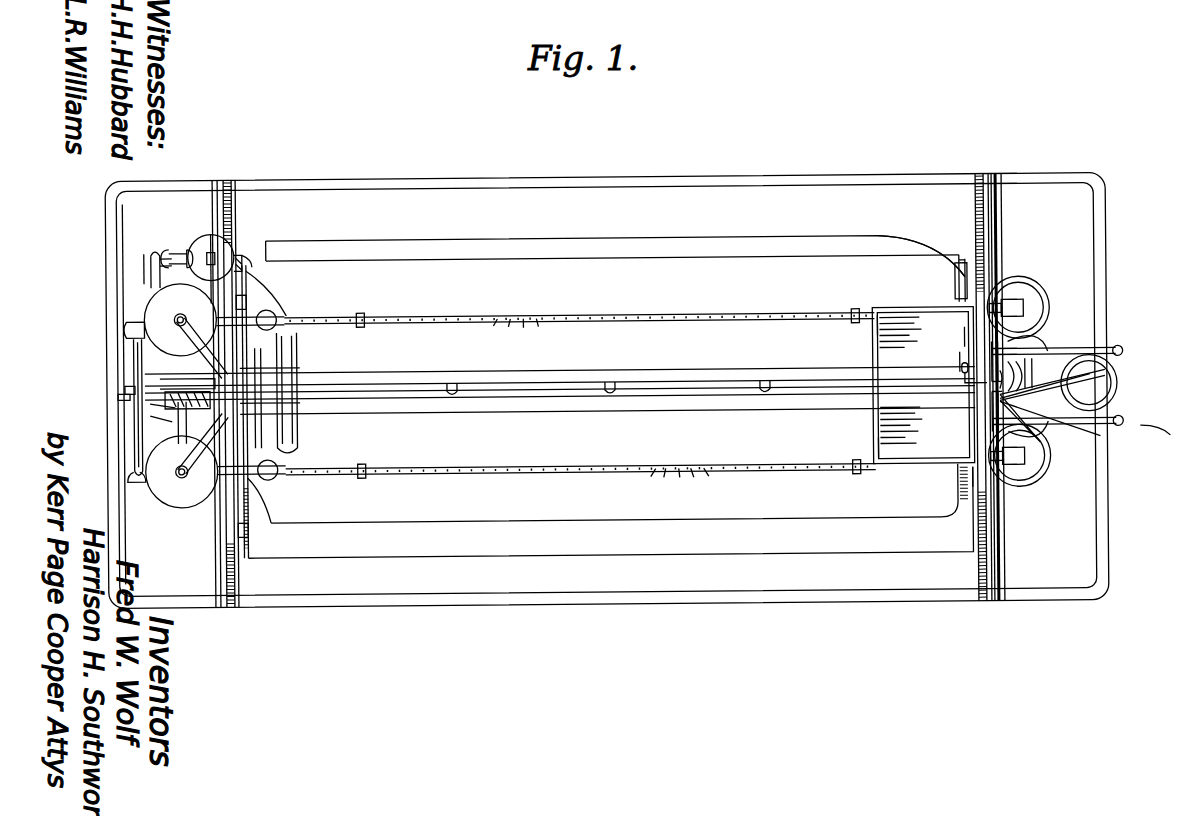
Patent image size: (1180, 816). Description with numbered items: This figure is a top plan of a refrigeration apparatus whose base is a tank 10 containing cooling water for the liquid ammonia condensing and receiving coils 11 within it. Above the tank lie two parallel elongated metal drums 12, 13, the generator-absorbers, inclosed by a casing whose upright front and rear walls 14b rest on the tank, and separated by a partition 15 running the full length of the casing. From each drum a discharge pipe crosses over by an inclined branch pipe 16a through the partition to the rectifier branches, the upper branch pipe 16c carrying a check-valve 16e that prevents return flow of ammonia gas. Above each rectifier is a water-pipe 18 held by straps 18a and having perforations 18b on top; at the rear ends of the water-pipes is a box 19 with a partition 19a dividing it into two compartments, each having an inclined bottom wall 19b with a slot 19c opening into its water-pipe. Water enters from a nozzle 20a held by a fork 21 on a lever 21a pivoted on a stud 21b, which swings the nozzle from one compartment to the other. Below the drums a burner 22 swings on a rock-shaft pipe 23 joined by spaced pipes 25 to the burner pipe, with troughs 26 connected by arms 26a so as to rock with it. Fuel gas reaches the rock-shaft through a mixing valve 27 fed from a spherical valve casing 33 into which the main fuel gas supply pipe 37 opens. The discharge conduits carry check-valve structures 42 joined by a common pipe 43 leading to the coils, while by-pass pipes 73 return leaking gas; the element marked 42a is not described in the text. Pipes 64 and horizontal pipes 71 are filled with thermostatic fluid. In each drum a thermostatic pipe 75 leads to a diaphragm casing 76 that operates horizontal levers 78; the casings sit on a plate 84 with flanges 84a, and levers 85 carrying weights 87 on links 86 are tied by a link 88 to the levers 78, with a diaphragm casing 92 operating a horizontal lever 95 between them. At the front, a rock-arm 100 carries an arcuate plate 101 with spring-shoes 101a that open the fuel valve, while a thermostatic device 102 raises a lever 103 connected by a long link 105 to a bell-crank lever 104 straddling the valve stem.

The tank 10 is at (1108, 272).
The liquid ammonia condensing and receiving coils 11 is at (884, 231).
The drum 12 is at (631, 517).
The drum 13 is at (518, 253).
The front and rear walls 14b is at (236, 213).
The partition 15 is at (425, 388).
The branch pipe 16a is at (285, 355).
The branch pipe 16c is at (212, 315).
The check-valve 16e is at (283, 316).
The water-pipe 18 is at (583, 306).
The straps 18a is at (363, 313).
The perforations 18b is at (600, 398).
The box 19 is at (868, 359).
The partition 19a is at (905, 395).
The bottom wall 19b is at (940, 420).
The slot 19c is at (898, 320).
The nozzle 20a is at (950, 460).
The fork 21 is at (962, 366).
The lever 21a is at (1036, 438).
The stud 21b is at (1100, 440).
The burner 22 is at (187, 377).
The pipe 23 is at (362, 380).
The pipes 25 is at (452, 398).
The troughs 26 is at (258, 284).
The arms 26a is at (254, 300).
The mixing valve 27 is at (150, 362).
The valve casing 33 is at (125, 384).
The main fuel gas supply pipe 37 is at (118, 393).
The check-valve structure 42 is at (137, 302).
The post foot 42a is at (142, 488).
The common pipe 43 is at (152, 280).
The pipe 64 is at (182, 323).
The horizontal pipes 71 is at (302, 371).
The by-pass pipes 73 is at (150, 345).
The pipe 75 is at (1005, 290).
The casing 76 is at (1020, 290).
The horizontal levers 78 is at (1096, 364).
The horizontal plate 84 is at (1025, 338).
The flanges 84a is at (1025, 310).
The levers 85 is at (1035, 354).
The links 86 is at (1159, 435).
The weights 87 is at (1112, 352).
The link 88 is at (1030, 350).
The diaphragm casing 92 is at (1095, 372).
The horizontal lever 95 is at (1085, 389).
The rock-arm 100 is at (188, 415).
The arcuate plate 101 is at (182, 420).
The spring-shoes 101a is at (150, 415).
The thermostatic device 102 is at (225, 252).
The lever 103 is at (208, 234).
The bell-crank lever 104 is at (150, 402).
The link 105 is at (265, 438).